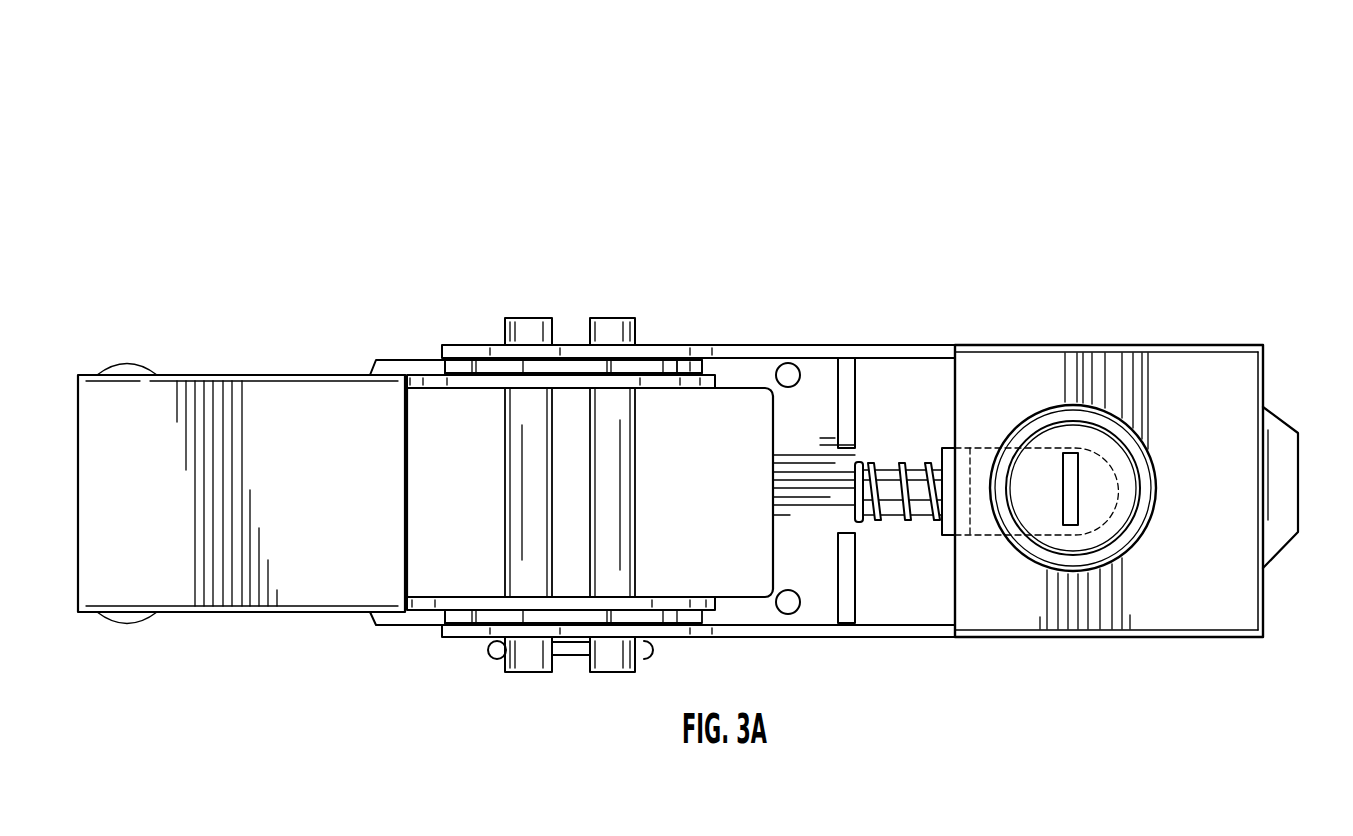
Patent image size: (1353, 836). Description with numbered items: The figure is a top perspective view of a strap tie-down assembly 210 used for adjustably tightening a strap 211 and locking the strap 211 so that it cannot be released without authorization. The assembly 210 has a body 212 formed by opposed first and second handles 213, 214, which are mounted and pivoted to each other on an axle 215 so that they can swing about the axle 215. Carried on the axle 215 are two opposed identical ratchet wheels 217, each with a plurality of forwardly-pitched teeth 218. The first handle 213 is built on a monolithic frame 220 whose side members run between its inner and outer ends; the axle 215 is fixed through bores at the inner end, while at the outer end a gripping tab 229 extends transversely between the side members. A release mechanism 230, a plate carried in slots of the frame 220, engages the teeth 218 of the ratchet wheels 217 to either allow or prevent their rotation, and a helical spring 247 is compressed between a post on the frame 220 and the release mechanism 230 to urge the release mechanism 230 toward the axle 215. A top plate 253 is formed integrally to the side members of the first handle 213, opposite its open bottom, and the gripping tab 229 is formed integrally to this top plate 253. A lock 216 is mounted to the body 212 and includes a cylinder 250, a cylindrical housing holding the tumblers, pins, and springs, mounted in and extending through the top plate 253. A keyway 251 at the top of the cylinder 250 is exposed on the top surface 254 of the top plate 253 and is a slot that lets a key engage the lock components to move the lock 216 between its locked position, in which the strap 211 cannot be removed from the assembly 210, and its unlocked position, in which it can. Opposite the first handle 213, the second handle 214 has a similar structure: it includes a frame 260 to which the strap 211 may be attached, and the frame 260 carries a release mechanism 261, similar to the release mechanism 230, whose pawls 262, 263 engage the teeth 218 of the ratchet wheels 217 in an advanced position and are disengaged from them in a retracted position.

The strap tie-down assembly 210 is at (1279, 135).
The strap 211 is at (250, 597).
The body 212 is at (1214, 340).
The first handle 213 is at (1217, 637).
The second handle 214 is at (405, 630).
The axle 215 is at (643, 292).
The lock 216 is at (1147, 419).
The ratchet wheels 217 is at (667, 350).
The teeth 218 is at (700, 365).
The frame 220 is at (944, 640).
The gripping tab 229 is at (1300, 530).
The release mechanism 230 is at (871, 404).
The helical spring 247 is at (917, 520).
The cylinder 250 is at (1155, 445).
The keyway 251 is at (1082, 502).
The top plate 253 is at (1122, 490).
The top surface 254 is at (1016, 412).
The frame 260 is at (413, 362).
The release mechanism 261 is at (367, 370).
The pawl 262 is at (604, 327).
The pawl 263 is at (435, 628).